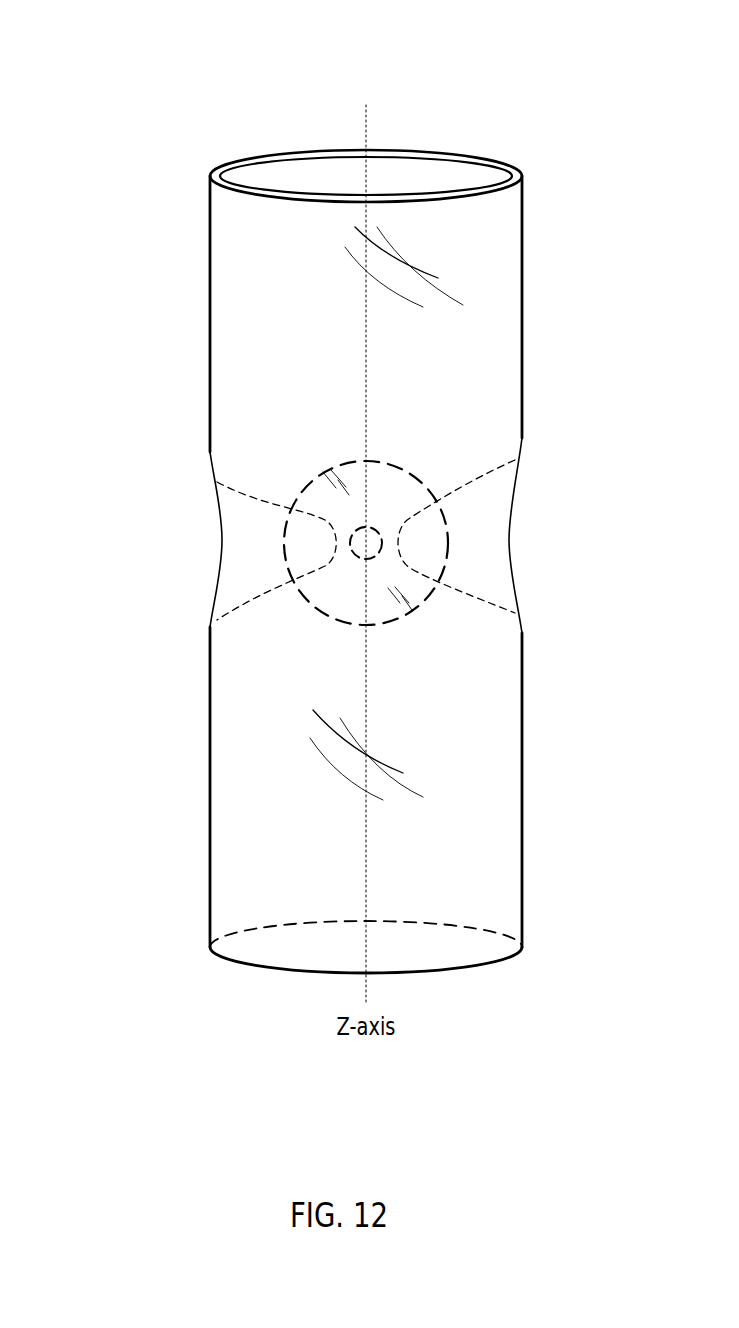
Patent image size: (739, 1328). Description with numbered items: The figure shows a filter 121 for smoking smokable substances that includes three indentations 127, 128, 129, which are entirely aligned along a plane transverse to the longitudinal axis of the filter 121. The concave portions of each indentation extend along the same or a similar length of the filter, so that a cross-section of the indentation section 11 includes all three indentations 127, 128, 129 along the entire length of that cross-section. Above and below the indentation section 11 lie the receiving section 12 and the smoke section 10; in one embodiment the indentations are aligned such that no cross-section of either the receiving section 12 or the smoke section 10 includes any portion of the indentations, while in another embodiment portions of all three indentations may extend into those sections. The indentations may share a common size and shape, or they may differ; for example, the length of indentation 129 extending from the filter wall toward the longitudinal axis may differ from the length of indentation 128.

The filter 121 is at (90, 75).
The receiving section 12 is at (549, 173).
The indentation section 11 is at (549, 465).
The smoke section 10 is at (549, 622).
The indentation 127 is at (333, 455).
The indentation 128 is at (485, 537).
The indentation 129 is at (282, 537).